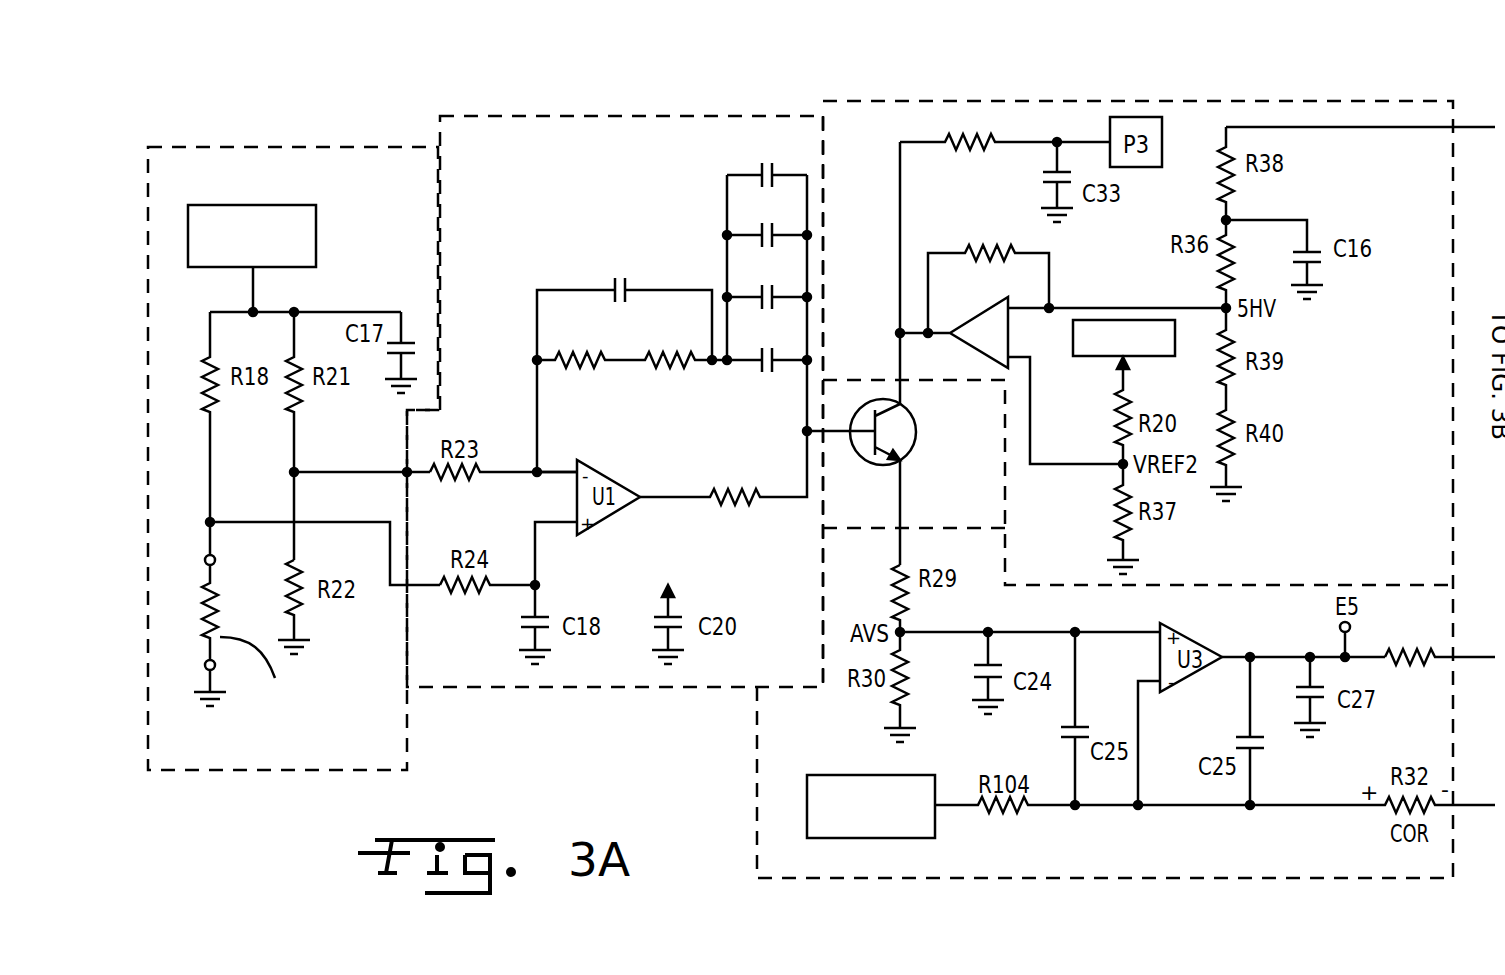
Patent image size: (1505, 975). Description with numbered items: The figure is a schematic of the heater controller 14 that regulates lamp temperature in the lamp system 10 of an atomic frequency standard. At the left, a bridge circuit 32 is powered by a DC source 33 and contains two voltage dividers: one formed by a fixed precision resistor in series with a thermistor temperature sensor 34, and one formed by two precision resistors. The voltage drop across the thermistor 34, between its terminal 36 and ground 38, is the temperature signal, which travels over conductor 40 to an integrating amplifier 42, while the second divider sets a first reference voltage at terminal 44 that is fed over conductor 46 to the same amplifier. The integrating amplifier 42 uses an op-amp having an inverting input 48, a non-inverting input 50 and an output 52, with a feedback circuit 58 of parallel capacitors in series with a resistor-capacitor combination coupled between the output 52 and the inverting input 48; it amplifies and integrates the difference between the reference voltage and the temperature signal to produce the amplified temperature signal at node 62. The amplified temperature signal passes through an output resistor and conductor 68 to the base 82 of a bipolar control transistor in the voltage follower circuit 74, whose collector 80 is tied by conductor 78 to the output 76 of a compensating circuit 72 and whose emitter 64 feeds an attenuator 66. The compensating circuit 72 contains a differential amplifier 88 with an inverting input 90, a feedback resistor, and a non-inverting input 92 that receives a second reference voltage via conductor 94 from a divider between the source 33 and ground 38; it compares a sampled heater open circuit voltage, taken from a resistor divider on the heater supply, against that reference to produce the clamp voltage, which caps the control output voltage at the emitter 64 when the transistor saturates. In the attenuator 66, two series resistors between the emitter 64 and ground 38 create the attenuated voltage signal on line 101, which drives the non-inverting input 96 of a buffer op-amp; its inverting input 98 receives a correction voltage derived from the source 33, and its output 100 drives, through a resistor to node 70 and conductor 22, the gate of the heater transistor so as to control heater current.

The lamp system 10 is at (580, 718).
The heater controller 14 is at (833, 98).
The conductor 22 is at (1478, 655).
The bridge circuit 32 is at (238, 146).
The DC source 33 is at (316, 215).
The temperature sensor 34 is at (220, 608).
The terminal 36 is at (208, 522).
The ground 38 is at (205, 680).
The conductor 40 is at (255, 522).
The integrating amplifier 42 is at (490, 116).
The terminal 44 is at (297, 470).
The conductor 46 is at (406, 476).
The inverting input 48 is at (577, 471).
The non-inverting input 50 is at (577, 523).
The output 52 is at (641, 496).
The feedback circuit 58 is at (560, 234).
The ATS node 62 is at (805, 426).
The emitter 64 is at (902, 498).
The attenuator 66 is at (757, 878).
The conductor 68 is at (849, 437).
The output node 70 is at (1450, 660).
The compensating circuit 72 is at (1372, 100).
The voltage follower circuit 74 is at (858, 532).
The output 76 is at (904, 330).
The conductor 78 is at (898, 343).
The collector 80 is at (898, 367).
The base 82 is at (836, 430).
The differential amplifier 88 is at (1083, 250).
The inverting input 90 is at (1034, 306).
The non-inverting input 92 is at (1032, 352).
The conductor 94 is at (1062, 465).
The non-inverting input 96 is at (1157, 634).
The inverting input 98 is at (1152, 690).
The output 100 is at (1242, 656).
The AVS line 101 is at (955, 632).